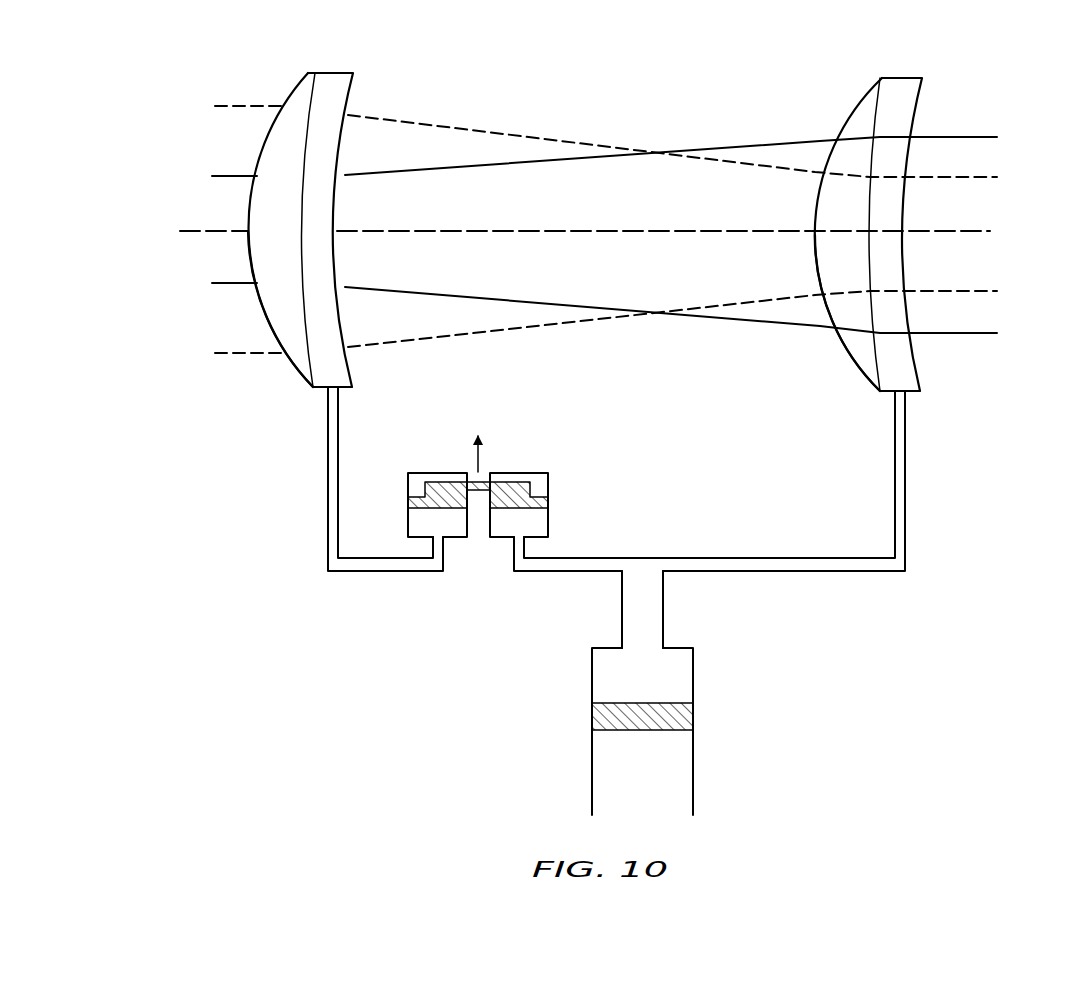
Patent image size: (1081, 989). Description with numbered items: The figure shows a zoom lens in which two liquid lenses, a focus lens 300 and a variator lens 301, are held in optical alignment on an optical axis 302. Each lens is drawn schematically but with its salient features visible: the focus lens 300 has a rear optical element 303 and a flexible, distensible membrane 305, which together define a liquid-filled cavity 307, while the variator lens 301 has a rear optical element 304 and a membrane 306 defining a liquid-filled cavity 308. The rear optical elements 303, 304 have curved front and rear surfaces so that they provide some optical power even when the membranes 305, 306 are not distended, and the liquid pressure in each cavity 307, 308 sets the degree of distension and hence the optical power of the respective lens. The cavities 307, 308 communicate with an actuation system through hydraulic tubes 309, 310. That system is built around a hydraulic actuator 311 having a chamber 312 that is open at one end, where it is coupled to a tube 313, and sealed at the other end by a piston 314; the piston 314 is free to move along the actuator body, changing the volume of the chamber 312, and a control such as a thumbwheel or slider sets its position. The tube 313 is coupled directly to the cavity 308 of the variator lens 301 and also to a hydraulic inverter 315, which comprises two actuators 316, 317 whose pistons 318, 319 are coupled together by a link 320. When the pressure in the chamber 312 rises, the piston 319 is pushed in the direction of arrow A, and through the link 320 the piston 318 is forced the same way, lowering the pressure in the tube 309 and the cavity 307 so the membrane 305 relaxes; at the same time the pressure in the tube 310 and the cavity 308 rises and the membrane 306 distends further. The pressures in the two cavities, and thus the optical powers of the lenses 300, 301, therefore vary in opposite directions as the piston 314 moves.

The focus lens 300 is at (317, 208).
The variator lens 301 is at (893, 213).
The optical axis 302 is at (985, 230).
The rear optical element 303 is at (341, 154).
The rear optical element 304 is at (902, 157).
The flexible, distensible membrane 305 is at (296, 90).
The flexible, distensible membrane 306 is at (862, 100).
The cavity 307 is at (266, 318).
The cavity 308 is at (850, 352).
The hydraulic tube 309 is at (327, 462).
The hydraulic tube 310 is at (906, 465).
The hydraulic actuator 311 is at (630, 693).
The chamber 312 is at (691, 681).
The tube 313 is at (665, 611).
The piston 314 is at (691, 720).
The hydraulic inverter 315 is at (478, 493).
The actuator 316 is at (408, 527).
The actuator 317 is at (548, 529).
The piston 318 is at (408, 501).
The piston 319 is at (548, 503).
The link 320 is at (478, 493).